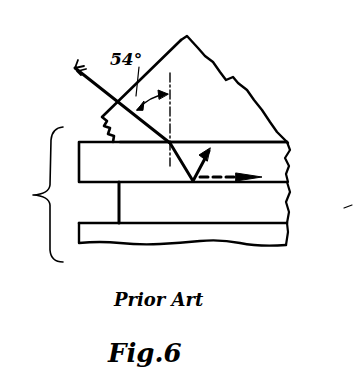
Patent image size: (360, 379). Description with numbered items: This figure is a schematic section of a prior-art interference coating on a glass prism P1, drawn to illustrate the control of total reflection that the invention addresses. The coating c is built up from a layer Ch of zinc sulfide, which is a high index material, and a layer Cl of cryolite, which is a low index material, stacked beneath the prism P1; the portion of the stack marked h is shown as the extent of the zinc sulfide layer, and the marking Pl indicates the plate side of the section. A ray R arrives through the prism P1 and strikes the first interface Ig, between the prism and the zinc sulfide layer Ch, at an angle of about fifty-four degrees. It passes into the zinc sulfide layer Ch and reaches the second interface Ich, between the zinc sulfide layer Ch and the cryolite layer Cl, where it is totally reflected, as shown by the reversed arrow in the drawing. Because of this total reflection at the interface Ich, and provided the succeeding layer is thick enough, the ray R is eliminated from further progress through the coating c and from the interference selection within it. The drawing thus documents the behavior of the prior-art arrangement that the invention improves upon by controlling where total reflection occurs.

The ray R is at (98, 87).
The glass prism P1 is at (207, 66).
The zinc sulfide layer Ch is at (272, 158).
The first interface Ig is at (250, 138).
The thickness of layer h is at (274, 174).
The cryolite layer Cl is at (278, 213).
The second interface Ich is at (148, 182).
The coating c is at (36, 194).
The plate Pl is at (349, 191).